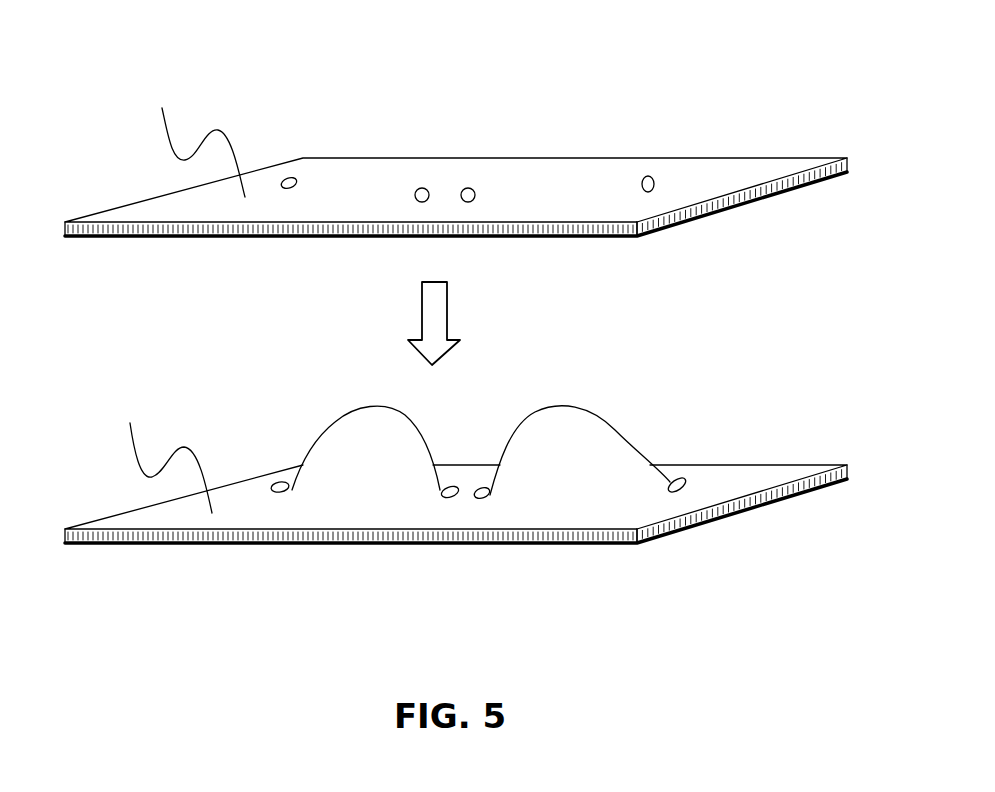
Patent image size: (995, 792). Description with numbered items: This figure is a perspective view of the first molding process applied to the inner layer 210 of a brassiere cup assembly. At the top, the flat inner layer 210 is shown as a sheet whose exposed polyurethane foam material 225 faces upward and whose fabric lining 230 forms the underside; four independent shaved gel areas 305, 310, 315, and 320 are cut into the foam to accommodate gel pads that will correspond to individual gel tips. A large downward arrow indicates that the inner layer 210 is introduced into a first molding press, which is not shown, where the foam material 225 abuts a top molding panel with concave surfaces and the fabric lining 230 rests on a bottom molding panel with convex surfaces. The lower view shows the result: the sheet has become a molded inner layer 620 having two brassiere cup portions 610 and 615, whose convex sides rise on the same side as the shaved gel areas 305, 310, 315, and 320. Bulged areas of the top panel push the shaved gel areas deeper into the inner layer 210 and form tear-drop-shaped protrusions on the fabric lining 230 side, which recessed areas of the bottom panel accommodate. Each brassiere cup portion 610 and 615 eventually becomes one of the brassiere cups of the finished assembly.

The inner layer 210 is at (729, 144).
The molded inner layer 620 is at (742, 438).
The polyurethane foam material 225 is at (176, 298).
The fabric lining 230 is at (642, 233).
The shaved gel area 305 is at (289, 178).
The shaved gel area 310 is at (422, 187).
The shaved gel area 315 is at (466, 188).
The shaved gel area 320 is at (647, 176).
The brassiere cup portion 610 is at (334, 452).
The brassiere cup portion 615 is at (590, 452).